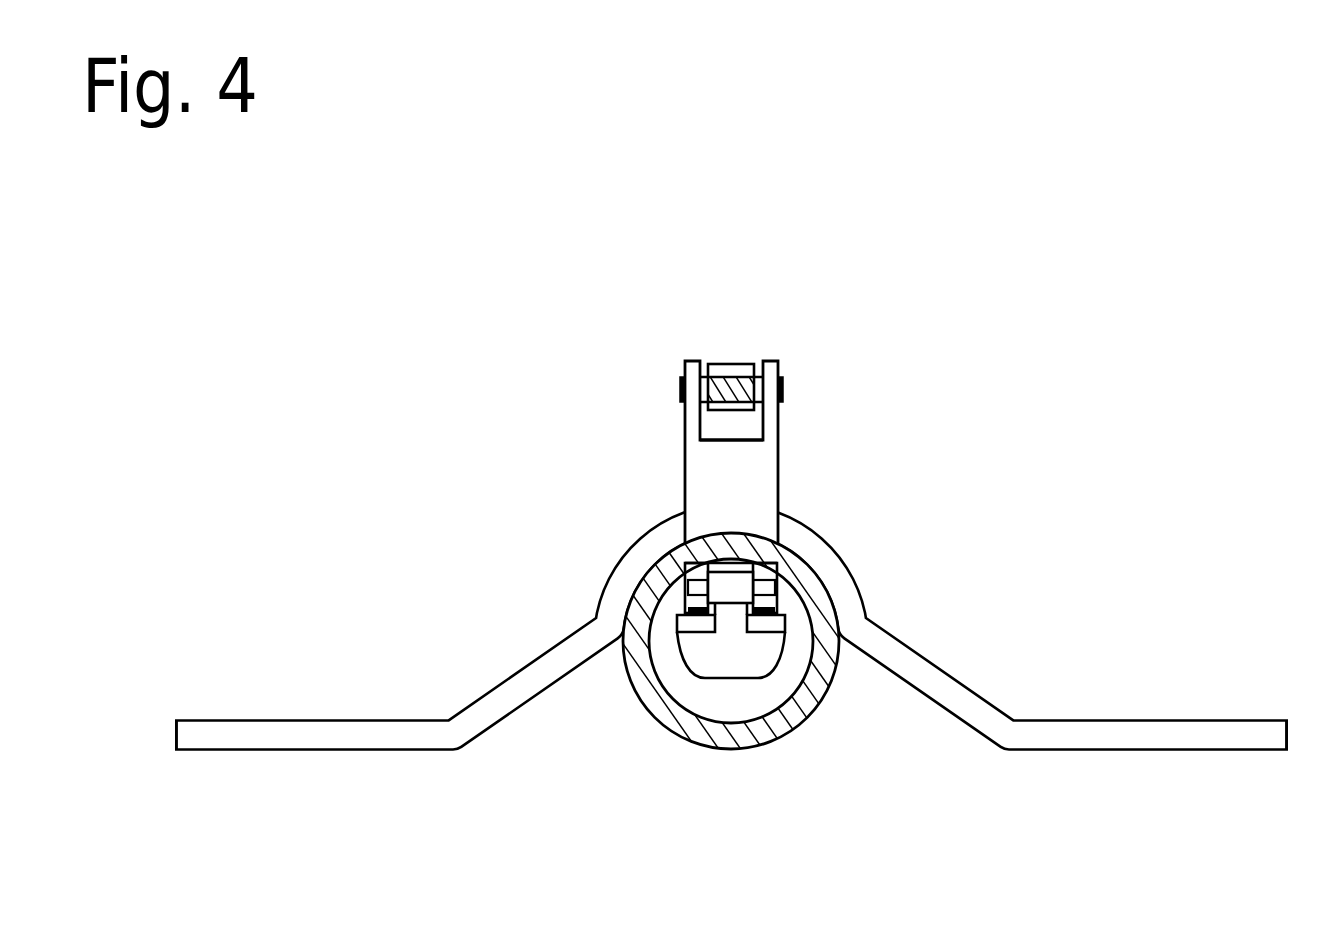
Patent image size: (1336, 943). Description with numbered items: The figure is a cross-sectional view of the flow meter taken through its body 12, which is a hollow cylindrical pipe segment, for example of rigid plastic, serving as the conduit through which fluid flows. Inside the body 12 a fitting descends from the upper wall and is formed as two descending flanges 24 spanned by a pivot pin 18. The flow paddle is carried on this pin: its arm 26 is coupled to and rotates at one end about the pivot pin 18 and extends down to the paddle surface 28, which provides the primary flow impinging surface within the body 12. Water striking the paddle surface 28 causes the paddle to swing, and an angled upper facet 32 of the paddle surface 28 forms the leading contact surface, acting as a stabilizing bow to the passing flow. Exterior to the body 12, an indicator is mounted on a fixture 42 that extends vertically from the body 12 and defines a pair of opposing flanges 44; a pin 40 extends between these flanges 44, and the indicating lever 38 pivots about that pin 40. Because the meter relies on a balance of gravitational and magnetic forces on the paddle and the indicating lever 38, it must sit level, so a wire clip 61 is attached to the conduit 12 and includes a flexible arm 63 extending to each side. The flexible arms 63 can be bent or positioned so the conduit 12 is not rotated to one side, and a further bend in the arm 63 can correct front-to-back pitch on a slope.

The body 12 is at (874, 462).
The pivot pin 18 is at (608, 487).
The descending flanges 24 is at (745, 530).
The arm 26 is at (901, 625).
The paddle surface 28 is at (781, 667).
The upper facet 32 is at (632, 736).
The indicating lever 38 is at (683, 260).
The pin 40 is at (861, 285).
The fixture 42 is at (873, 385).
The opposing flanges 44 is at (731, 242).
The wire clip 61 is at (731, 627).
The flexible arm 63 is at (692, 642).